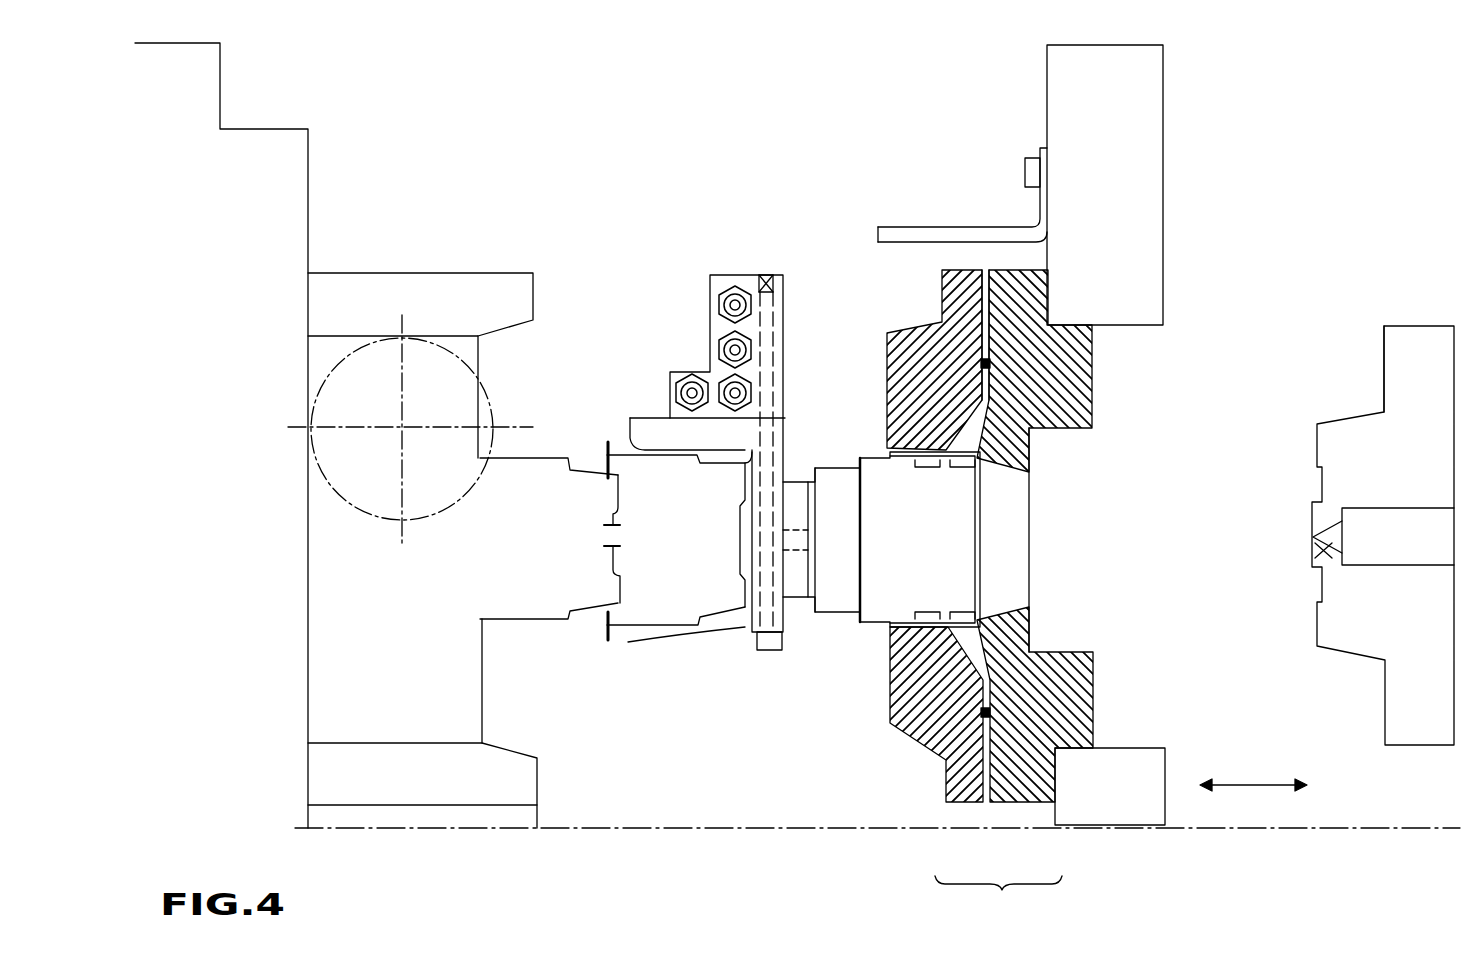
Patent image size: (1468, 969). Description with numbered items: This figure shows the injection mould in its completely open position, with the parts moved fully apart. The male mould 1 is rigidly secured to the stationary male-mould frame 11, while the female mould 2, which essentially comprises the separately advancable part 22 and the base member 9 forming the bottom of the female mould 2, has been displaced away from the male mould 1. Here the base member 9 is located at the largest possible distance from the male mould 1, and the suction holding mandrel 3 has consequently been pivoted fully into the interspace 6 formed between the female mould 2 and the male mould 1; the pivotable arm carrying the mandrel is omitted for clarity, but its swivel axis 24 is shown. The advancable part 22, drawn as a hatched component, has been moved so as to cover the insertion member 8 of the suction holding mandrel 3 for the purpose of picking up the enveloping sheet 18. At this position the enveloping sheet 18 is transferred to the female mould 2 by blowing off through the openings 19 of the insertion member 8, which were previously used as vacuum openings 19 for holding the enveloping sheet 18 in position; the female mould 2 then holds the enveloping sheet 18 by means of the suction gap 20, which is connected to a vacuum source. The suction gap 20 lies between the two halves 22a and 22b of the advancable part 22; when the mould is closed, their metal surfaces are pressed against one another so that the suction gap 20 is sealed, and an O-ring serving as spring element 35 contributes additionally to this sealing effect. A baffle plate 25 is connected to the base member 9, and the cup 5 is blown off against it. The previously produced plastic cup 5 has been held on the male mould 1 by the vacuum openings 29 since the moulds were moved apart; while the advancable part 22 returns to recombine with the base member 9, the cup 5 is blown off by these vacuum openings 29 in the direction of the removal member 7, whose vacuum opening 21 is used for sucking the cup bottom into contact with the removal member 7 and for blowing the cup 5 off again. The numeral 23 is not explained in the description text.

The male mould 1 is at (528, 599).
The female mould 2 is at (1348, 455).
The suction holding mandrel 3 is at (870, 637).
The cup 5 is at (633, 641).
The interspace 6 is at (715, 780).
The removal member 7 is at (838, 618).
The insertion member 8 is at (686, 640).
The base member 9 is at (1432, 680).
The male-mould frame 11 is at (232, 313).
The enveloping sheet 18 is at (905, 616).
The openings 19 is at (1029, 475).
The suction gap 20 is at (982, 312).
The vacuum opening 21 is at (745, 563).
The advancable part 22 is at (998, 899).
The half of the advancable part 22a is at (932, 573).
The half of the advancable part 22b is at (1036, 573).
The centering pin 23 is at (1312, 556).
The swivel axis 24 is at (395, 438).
The baffle plate 25 is at (962, 230).
The vacuum openings 29 is at (612, 538).
The spring element 35 is at (990, 364).